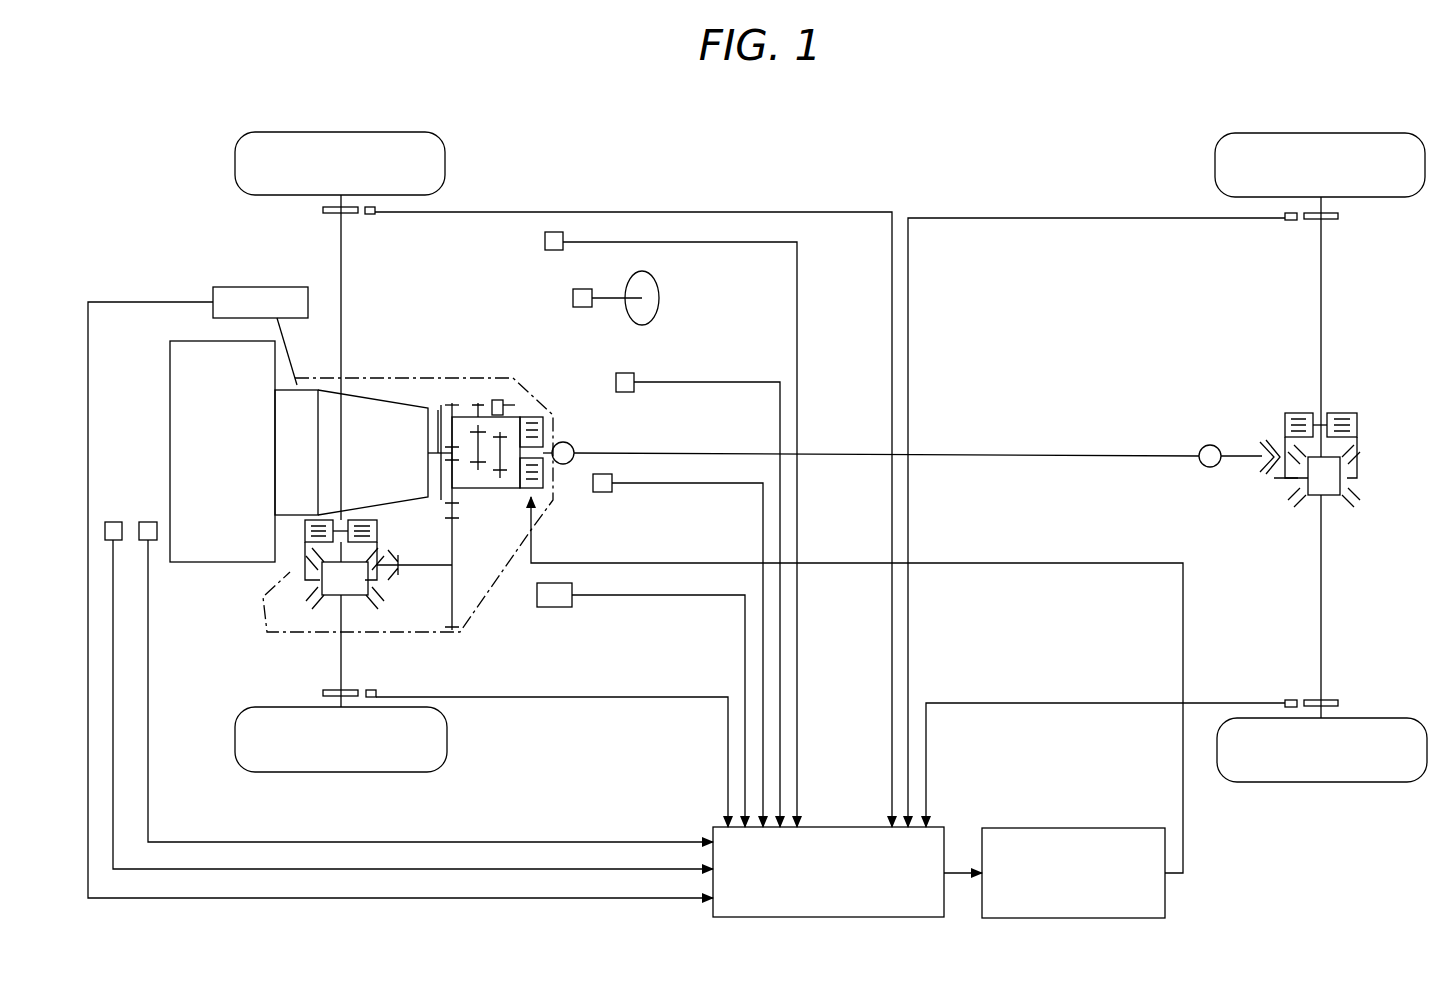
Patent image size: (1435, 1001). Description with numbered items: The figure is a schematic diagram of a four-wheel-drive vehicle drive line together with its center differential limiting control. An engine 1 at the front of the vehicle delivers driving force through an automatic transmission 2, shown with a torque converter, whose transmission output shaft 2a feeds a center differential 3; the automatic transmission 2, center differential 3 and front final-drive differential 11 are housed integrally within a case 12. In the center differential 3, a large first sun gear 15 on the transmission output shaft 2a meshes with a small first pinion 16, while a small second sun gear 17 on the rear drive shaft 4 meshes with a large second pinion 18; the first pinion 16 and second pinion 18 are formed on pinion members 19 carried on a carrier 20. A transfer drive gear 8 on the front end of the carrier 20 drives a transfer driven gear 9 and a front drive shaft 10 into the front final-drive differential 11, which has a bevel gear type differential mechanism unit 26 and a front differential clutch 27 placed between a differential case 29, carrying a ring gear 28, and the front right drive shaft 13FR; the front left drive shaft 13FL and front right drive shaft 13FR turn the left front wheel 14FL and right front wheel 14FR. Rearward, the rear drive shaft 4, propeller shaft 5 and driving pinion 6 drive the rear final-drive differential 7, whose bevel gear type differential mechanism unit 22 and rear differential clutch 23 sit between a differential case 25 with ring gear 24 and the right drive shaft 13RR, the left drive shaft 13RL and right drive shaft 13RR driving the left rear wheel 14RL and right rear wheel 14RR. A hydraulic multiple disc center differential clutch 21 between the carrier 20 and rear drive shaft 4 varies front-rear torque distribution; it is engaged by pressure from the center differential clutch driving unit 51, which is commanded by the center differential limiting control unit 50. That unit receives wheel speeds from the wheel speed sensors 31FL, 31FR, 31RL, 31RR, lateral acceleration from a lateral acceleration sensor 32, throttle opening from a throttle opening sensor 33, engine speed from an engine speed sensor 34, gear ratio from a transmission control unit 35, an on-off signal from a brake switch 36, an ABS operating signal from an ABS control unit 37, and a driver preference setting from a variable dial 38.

The engine 1 is at (170, 395).
The automatic transmission 2 is at (330, 388).
The transmission output shaft 2a is at (438, 447).
The center differential 3 is at (482, 546).
The rear drive shaft 4 is at (564, 442).
The propeller shaft 5 is at (850, 452).
The driving pinion 6 is at (1238, 454).
The rear final-drive differential 7 is at (1355, 352).
The transfer drive gear 8 is at (441, 435).
The transfer driven gear 9 is at (461, 633).
The front drive shaft 10 is at (427, 566).
The front final-drive differential 11 is at (420, 620).
The case 12 is at (263, 612).
The front right drive shaft 13FR is at (341, 263).
The front left drive shaft 13FL is at (341, 674).
The right drive shaft 13RR is at (1321, 244).
The left drive shaft 13RL is at (1321, 634).
The right front wheel 14FR is at (237, 166).
The left front wheel 14FL is at (340, 772).
The right rear wheel 14RR is at (1216, 169).
The left rear wheel 14RL is at (1322, 782).
The first sun gear 15 is at (478, 473).
The first pinion 16 is at (478, 405).
The second sun gear 17 is at (501, 475).
The second pinion 18 is at (507, 400).
The pinion members 19 is at (496, 400).
The carrier 20 is at (457, 405).
The center differential clutch 21 is at (544, 500).
The bevel gear type differential mechanism unit 22 is at (1350, 518).
The rear differential clutch 23 is at (1367, 407).
The ring gear 24 is at (1360, 480).
The differential case 25 is at (1358, 444).
The bevel gear type differential mechanism unit 26 is at (308, 603).
The front differential clutch 27 is at (386, 527).
The ring gear 28 is at (300, 582).
The differential case 29 is at (303, 562).
The wheel speed sensor 31FR is at (370, 214).
The wheel speed sensor 31FL is at (371, 690).
The wheel speed sensor 31RR is at (1291, 220).
The wheel speed sensor 31RL is at (1291, 700).
The lateral acceleration sensor 32 is at (603, 492).
The throttle opening sensor 33 is at (148, 520).
The engine speed sensor 34 is at (112, 520).
The transmission control unit 35 is at (234, 286).
The brake switch 36 is at (556, 250).
The ABS control unit 37 is at (554, 607).
The variable dial 38 is at (625, 392).
The center differential limiting control unit 50 is at (828, 826).
The center differential clutch driving unit 51 is at (1066, 828).